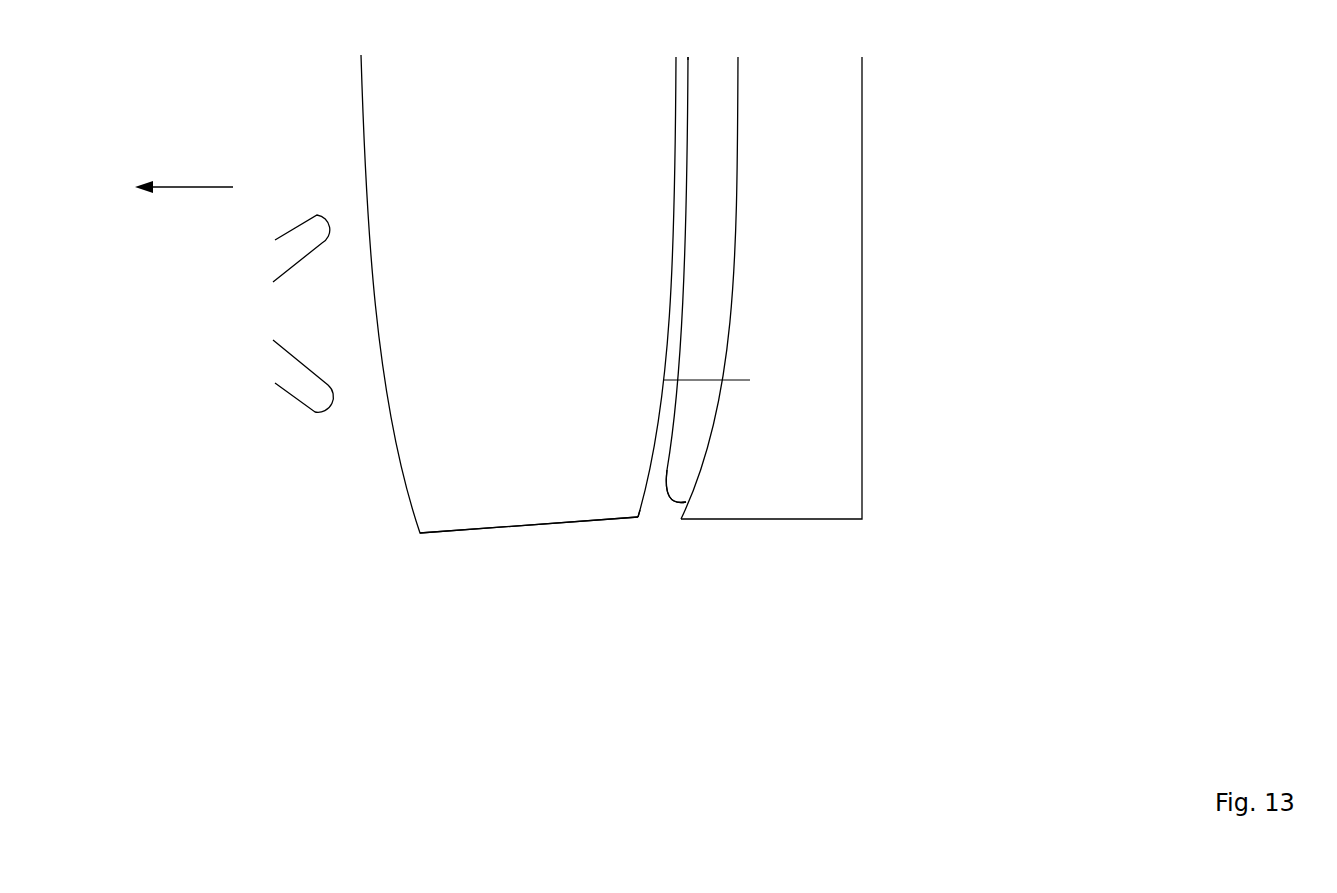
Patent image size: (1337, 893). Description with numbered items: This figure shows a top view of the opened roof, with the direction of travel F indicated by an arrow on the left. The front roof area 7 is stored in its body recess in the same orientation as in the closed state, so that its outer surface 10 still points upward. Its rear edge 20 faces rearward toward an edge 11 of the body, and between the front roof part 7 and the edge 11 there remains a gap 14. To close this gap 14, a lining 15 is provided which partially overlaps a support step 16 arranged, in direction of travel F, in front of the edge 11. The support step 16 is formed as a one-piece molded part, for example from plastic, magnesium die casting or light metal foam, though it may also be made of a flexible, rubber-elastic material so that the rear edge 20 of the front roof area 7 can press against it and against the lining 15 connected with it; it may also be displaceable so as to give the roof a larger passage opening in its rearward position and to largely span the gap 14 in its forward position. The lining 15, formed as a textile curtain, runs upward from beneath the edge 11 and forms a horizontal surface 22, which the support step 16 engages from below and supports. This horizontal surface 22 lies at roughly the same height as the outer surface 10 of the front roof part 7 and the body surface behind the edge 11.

The front roof area 7 is at (494, 128).
The surface of the front roof area 10 is at (513, 358).
The edge 11 is at (738, 351).
The gap 14 is at (657, 523).
The lining 15 is at (688, 316).
The support step 16 is at (693, 453).
The rear edge 20 is at (664, 247).
The horizontal surface 22 is at (709, 176).
The direction of travel F is at (182, 187).